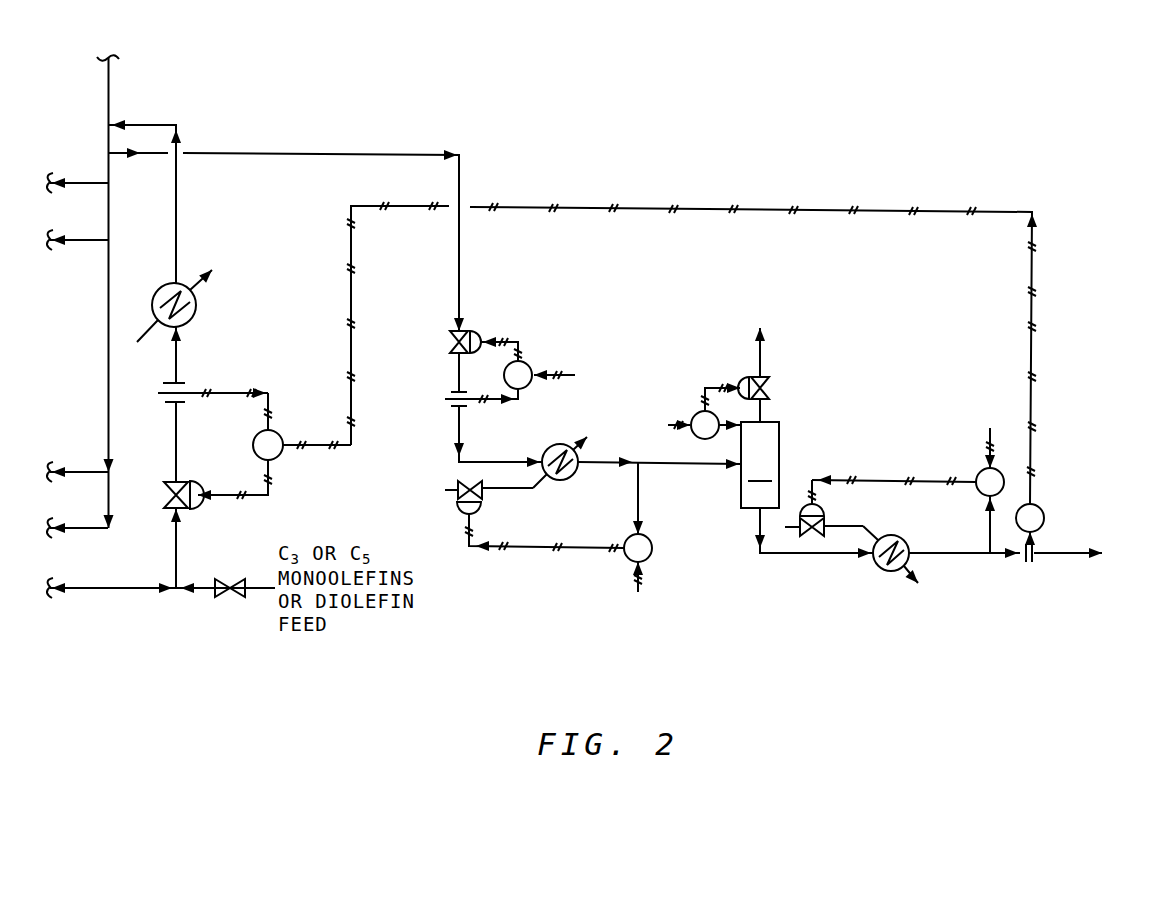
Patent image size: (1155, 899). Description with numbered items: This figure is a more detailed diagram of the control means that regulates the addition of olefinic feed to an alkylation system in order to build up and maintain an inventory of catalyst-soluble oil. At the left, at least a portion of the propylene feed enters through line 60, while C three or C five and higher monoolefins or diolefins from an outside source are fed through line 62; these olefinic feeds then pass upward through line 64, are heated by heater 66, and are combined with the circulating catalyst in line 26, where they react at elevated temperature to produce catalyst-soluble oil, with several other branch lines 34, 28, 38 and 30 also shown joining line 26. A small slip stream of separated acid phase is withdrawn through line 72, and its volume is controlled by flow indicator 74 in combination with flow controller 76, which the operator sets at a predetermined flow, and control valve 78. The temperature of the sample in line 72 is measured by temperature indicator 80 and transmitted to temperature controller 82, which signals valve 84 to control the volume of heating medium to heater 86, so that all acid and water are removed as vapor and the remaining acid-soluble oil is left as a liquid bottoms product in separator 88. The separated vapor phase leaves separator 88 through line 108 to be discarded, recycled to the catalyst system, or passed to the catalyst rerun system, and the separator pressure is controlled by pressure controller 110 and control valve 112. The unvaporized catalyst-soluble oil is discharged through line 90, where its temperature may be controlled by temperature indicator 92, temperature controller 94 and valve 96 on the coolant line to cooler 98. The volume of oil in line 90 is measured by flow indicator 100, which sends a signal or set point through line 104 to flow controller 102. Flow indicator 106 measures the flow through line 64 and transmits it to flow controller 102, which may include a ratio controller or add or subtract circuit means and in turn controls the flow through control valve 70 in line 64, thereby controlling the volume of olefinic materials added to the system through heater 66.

The circulating catalyst line 26 is at (106, 95).
The conduit 34 is at (84, 171).
The conduit 28 is at (72, 243).
The conduit 38 is at (80, 463).
The conduit 30 is at (108, 515).
The propylene feed line 60 is at (66, 591).
The outside olefin feed line 62 is at (200, 591).
The olefinic feed line 64 is at (174, 214).
The heater 66 is at (158, 300).
The slip stream line 72 is at (238, 155).
The flow indicator 106 is at (170, 395).
The flow controller 102 is at (254, 446).
The control valve 70 is at (168, 484).
The control valve 78 is at (452, 340).
The flow controller 76 is at (533, 370).
The flow indicator 74 is at (453, 400).
The valve 84 is at (468, 489).
The heater 86 is at (571, 481).
The temperature indicator 80 is at (637, 462).
The temperature controller 82 is at (626, 561).
The separator 88 is at (760, 465).
The vapor discharge line 108 is at (766, 345).
The pressure controller 110 is at (700, 412).
The control valve 112 is at (772, 384).
The catalyst-soluble oil discharge line 90 is at (756, 550).
The valve 96 is at (825, 525).
The cooler 98 is at (902, 541).
The temperature controller 94 is at (976, 479).
The flow indicator 100 is at (1034, 514).
The temperature indicator 92 is at (992, 560).
The signal line 104 is at (1028, 309).